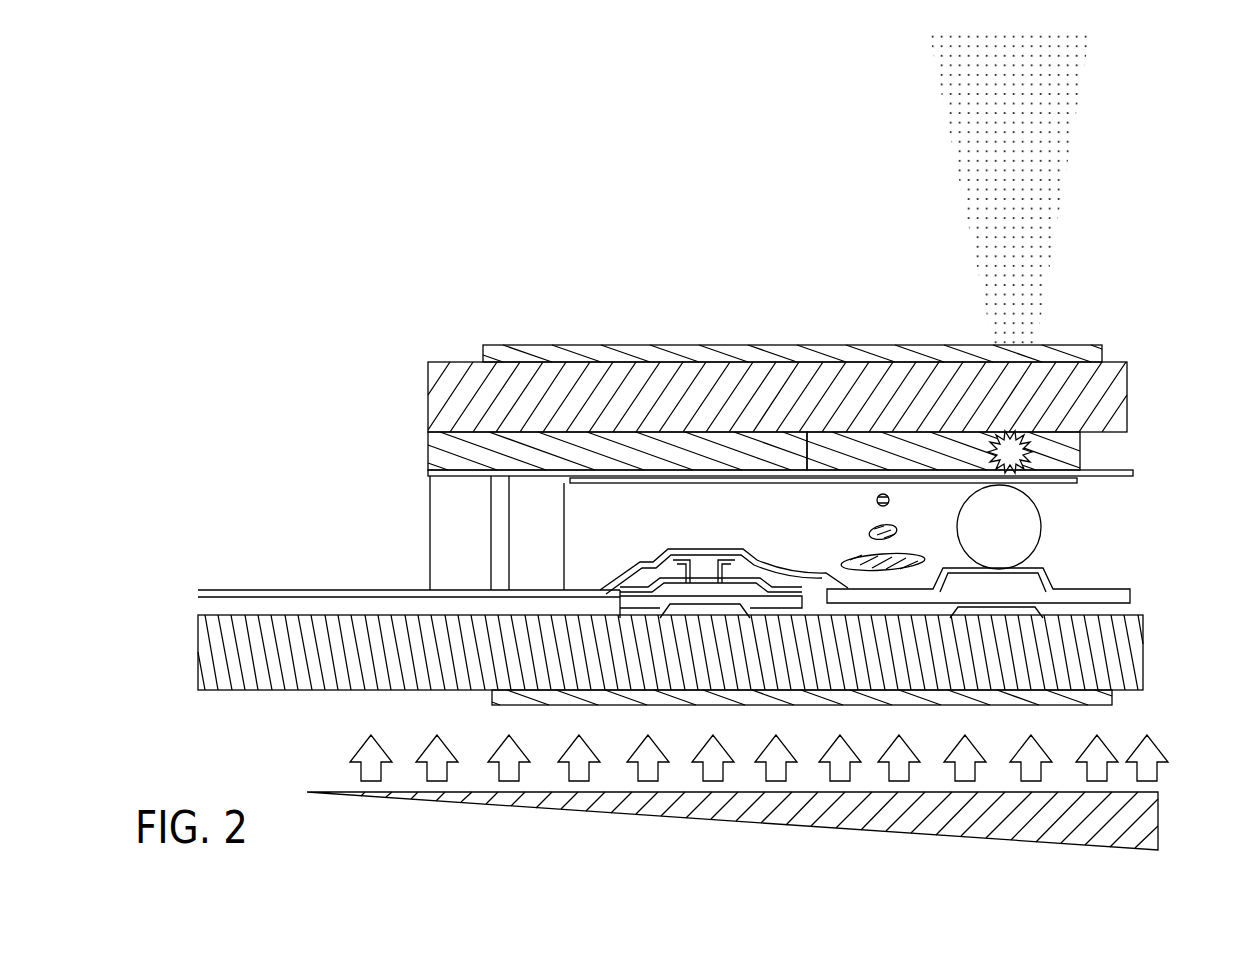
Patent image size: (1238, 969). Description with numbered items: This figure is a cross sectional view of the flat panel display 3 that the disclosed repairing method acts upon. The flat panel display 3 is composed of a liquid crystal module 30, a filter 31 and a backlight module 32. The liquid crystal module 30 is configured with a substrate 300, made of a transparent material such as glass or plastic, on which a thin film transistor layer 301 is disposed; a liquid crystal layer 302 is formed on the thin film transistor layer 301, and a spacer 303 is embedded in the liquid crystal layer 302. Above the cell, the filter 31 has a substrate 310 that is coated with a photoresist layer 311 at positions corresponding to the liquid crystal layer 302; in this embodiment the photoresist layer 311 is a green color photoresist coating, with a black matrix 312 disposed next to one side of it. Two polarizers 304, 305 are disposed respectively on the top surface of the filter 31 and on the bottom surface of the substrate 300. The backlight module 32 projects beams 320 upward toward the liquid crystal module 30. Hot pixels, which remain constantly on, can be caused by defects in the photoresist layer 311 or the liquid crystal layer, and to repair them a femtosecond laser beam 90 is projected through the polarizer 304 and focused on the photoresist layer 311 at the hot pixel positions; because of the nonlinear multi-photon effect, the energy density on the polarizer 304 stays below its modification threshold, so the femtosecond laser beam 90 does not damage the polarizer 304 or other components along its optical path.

The flat panel display 3 is at (350, 272).
The liquid crystal module 30 is at (710, 548).
The filter 31 is at (778, 398).
The backlight module 32 is at (1148, 822).
The femtosecond laser beam 90 is at (1055, 135).
The substrate 300 is at (1130, 652).
The thin film transistor layer 301 is at (703, 572).
The liquid crystal layer 302 is at (783, 512).
The spacer 303 is at (1040, 520).
The polarizer 304 is at (1068, 352).
The polarizer 305 is at (1110, 700).
The substrate 310 is at (1117, 398).
The photoresist layer 311 is at (1078, 448).
The black matrix layer 312 is at (450, 448).
The backlight 320 is at (1148, 766).